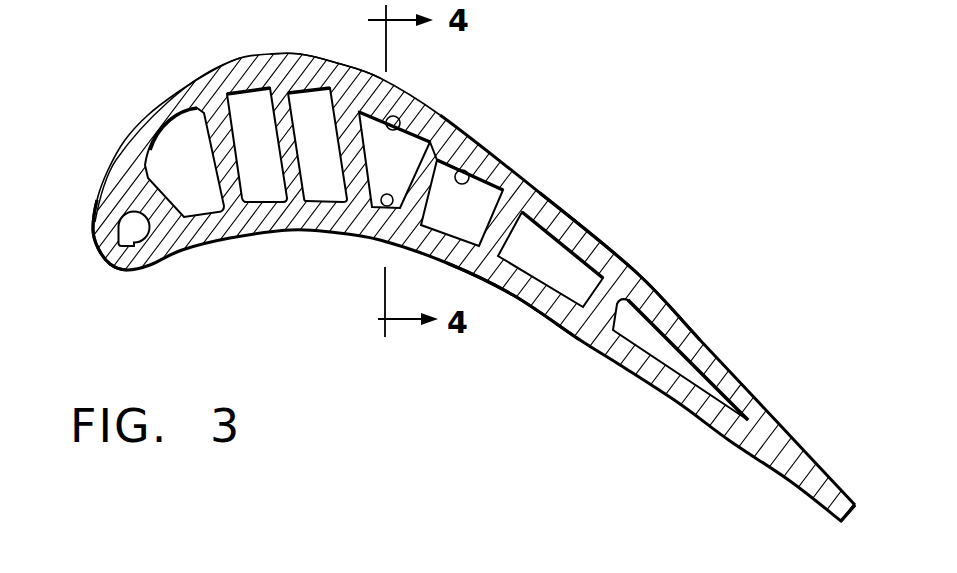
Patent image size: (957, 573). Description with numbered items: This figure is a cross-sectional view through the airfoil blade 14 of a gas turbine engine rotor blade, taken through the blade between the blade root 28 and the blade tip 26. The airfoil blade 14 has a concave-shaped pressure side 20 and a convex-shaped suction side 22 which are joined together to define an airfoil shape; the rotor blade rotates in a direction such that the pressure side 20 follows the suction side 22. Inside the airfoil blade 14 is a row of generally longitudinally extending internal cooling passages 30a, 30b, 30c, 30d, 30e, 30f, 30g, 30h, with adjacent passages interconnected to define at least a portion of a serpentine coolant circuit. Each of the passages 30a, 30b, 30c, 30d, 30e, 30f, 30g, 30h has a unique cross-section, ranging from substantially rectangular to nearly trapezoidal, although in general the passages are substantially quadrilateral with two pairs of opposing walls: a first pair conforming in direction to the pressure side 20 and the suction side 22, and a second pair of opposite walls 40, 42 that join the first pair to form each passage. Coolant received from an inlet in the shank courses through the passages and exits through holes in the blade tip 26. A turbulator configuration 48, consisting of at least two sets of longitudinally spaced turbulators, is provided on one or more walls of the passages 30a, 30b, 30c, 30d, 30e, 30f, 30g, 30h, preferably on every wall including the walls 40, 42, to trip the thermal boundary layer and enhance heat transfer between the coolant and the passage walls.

The airfoil blade 14 is at (575, 126).
The pressure side 20 is at (530, 306).
The suction side 22 is at (647, 287).
The blade tip 26 is at (853, 521).
The blade root 28 is at (113, 266).
The cooling passage 30a is at (134, 246).
The cooling passage 30b is at (207, 181).
The cooling passage 30c is at (255, 118).
The cooling passage 30d is at (320, 178).
The cooling passage 30e is at (410, 157).
The cooling passage 30f is at (482, 202).
The cooling passage 30g is at (547, 250).
The cooling passage 30h is at (643, 333).
The wall 40 is at (342, 63).
The wall 42 is at (440, 145).
The turbulator configuration 48 is at (402, 114).